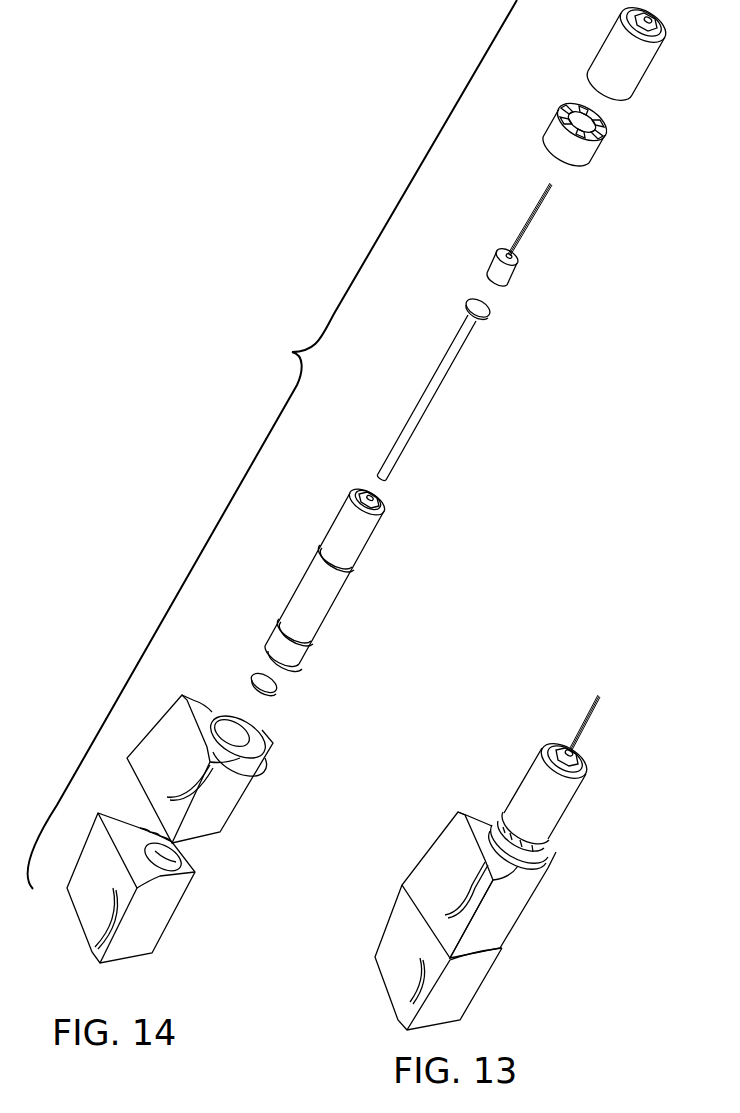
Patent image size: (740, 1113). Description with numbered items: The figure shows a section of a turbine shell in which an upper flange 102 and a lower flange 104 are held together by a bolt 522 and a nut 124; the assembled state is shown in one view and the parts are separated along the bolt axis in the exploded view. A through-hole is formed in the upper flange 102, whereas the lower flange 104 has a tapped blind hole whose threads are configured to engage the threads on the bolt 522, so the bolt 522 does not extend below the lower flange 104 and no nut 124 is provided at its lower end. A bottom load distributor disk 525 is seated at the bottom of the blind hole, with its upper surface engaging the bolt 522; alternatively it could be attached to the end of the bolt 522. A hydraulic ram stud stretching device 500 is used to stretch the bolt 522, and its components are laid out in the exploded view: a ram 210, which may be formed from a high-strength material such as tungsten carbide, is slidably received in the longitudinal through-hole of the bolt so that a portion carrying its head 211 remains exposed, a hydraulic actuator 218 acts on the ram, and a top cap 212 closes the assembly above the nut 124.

In FIG. 14, the top cap 212 is at (645, 57).
In FIG. 14, the nut 124 is at (590, 160).
In FIG. 14, the hydraulic actuator 218 is at (535, 247).
In FIG. 14, the head 211 is at (485, 300).
In FIG. 14, the ram 210 is at (447, 368).
In FIG. 13, the bolt 522 is at (541, 803).
In FIG. 14, the bolt 522 is at (330, 588).
In FIG. 14, the bottom load distributor disk 525 is at (278, 686).
In FIG. 13, the upper flange 102 is at (505, 912).
In FIG. 14, the upper flange 102 is at (233, 797).
In FIG. 13, the lower flange 104 is at (467, 985).
In FIG. 14, the lower flange 104 is at (160, 915).
In FIG. 13, the hydraulic ram stud stretching device 500 is at (608, 744).